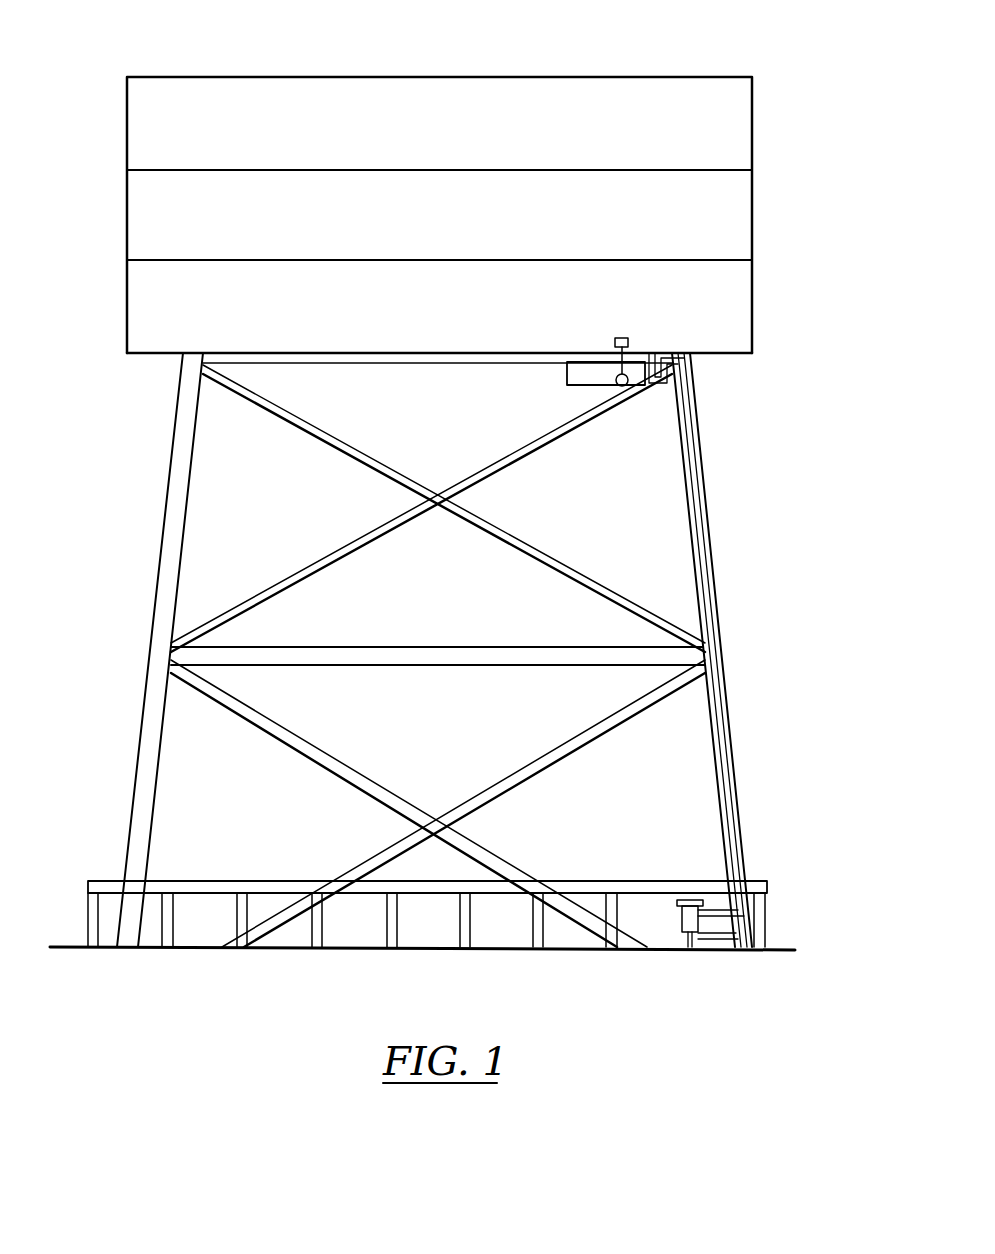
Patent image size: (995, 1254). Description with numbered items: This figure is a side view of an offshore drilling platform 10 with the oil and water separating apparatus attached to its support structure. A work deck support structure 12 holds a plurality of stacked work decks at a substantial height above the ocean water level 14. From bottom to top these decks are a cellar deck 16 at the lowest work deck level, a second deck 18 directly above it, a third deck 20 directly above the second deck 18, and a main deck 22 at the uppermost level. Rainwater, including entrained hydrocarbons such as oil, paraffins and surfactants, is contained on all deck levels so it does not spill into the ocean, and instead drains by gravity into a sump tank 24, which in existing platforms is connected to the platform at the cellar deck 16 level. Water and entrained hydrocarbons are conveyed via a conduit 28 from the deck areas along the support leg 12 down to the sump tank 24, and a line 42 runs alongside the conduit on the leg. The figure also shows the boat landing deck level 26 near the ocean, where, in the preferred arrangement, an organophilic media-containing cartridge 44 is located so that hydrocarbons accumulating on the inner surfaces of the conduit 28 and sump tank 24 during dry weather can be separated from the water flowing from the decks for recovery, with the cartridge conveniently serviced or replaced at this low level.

The offshore drilling platform 10 is at (776, 288).
The work deck support structure 12 is at (713, 582).
The ocean water level 14 is at (70, 943).
The cellar deck 16 is at (168, 348).
The second deck 18 is at (178, 258).
The third deck 20 is at (178, 168).
The main deck 22 is at (175, 77).
The sump tank 24 is at (638, 387).
The boat landing deck level 26 is at (575, 882).
The conduit 28 is at (685, 483).
The conduit 42 is at (713, 632).
The organophilic media-containing cartridge 44 is at (700, 922).